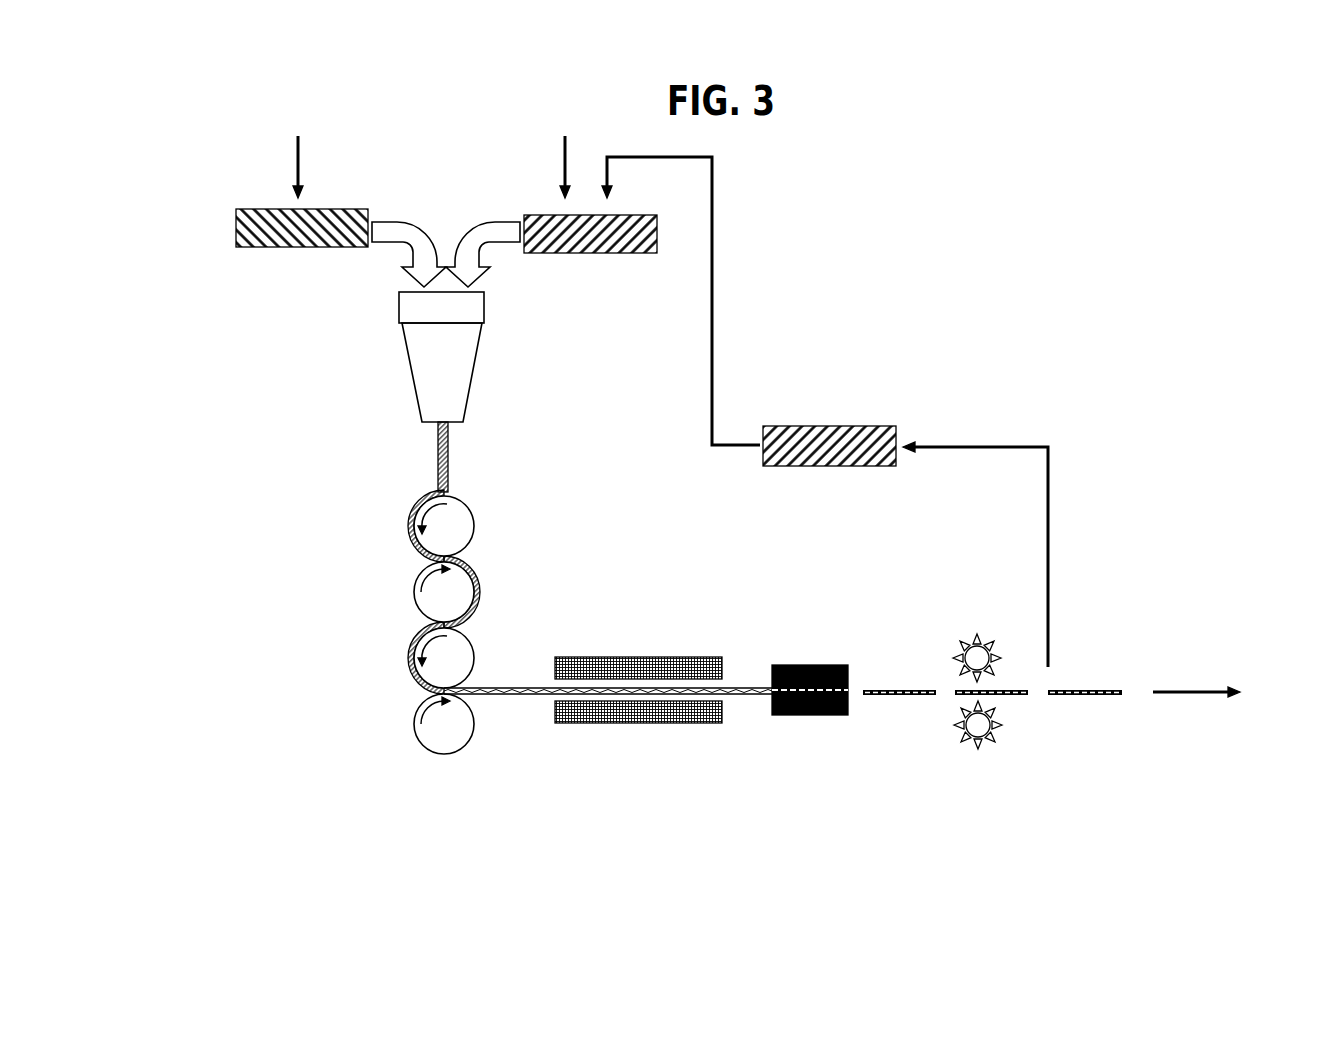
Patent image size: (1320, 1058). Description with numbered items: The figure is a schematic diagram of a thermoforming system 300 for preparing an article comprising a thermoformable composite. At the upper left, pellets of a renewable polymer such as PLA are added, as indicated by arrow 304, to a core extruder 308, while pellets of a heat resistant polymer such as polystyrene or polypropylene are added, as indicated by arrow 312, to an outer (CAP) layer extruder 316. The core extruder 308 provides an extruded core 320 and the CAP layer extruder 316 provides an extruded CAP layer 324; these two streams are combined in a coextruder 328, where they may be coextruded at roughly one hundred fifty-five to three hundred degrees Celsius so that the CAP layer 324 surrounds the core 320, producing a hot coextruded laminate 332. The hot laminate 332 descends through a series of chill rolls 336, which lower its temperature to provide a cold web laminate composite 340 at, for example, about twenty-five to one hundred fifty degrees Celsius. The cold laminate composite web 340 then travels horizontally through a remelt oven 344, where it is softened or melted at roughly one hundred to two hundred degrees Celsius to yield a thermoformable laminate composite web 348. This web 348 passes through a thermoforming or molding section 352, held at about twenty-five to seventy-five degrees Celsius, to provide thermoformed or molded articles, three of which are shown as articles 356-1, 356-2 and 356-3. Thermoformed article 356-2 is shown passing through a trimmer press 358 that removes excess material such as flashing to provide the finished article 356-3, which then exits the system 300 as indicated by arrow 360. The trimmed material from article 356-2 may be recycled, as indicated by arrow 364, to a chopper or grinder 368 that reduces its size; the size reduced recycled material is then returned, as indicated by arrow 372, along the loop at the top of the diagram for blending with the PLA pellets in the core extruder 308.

The thermoforming system 300 is at (967, 267).
The arrow 304 is at (562, 171).
The core extruder 308 is at (578, 255).
The arrow 312 is at (296, 170).
The outer (CAP) layer extruder 316 is at (293, 248).
The extruded core 320 is at (492, 247).
The extruded CAP layer 324 is at (410, 246).
The coextruder 328 is at (409, 365).
The hot coextruded laminate 332 is at (447, 460).
The chill rolls 336 is at (383, 603).
The cold web laminate composite 340 is at (505, 687).
The remelt oven 344 is at (657, 633).
The thermoformable laminate composite web 348 is at (742, 688).
The thermoforming or molding section 352 is at (810, 730).
The thermoformed article 356-1 is at (903, 691).
The thermoformed article 356-2 is at (1010, 695).
The finished article 356-3 is at (1088, 691).
The trimmer press 358 is at (955, 752).
The arrow 360 is at (1185, 693).
The arrow 364 is at (982, 445).
The chopper or grinder 368 is at (840, 425).
The arrow 372 is at (713, 270).